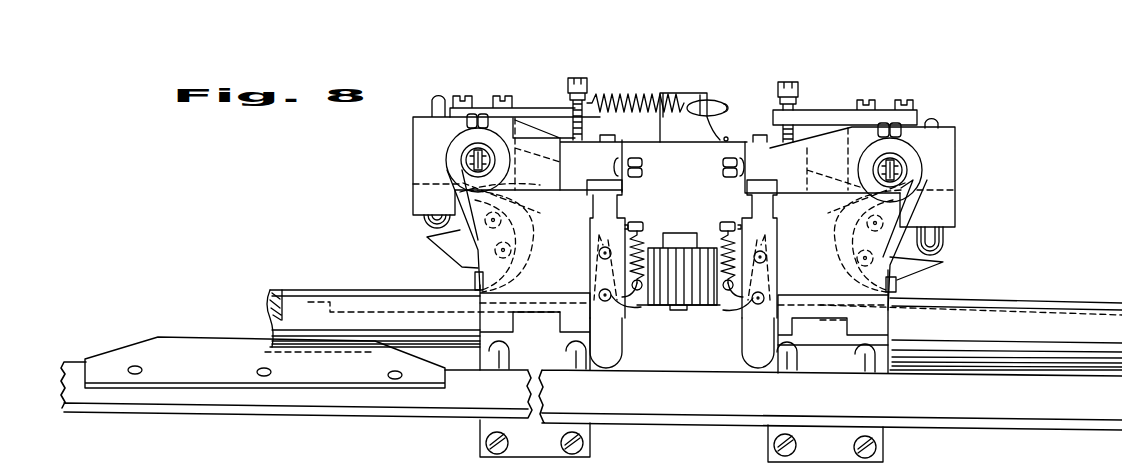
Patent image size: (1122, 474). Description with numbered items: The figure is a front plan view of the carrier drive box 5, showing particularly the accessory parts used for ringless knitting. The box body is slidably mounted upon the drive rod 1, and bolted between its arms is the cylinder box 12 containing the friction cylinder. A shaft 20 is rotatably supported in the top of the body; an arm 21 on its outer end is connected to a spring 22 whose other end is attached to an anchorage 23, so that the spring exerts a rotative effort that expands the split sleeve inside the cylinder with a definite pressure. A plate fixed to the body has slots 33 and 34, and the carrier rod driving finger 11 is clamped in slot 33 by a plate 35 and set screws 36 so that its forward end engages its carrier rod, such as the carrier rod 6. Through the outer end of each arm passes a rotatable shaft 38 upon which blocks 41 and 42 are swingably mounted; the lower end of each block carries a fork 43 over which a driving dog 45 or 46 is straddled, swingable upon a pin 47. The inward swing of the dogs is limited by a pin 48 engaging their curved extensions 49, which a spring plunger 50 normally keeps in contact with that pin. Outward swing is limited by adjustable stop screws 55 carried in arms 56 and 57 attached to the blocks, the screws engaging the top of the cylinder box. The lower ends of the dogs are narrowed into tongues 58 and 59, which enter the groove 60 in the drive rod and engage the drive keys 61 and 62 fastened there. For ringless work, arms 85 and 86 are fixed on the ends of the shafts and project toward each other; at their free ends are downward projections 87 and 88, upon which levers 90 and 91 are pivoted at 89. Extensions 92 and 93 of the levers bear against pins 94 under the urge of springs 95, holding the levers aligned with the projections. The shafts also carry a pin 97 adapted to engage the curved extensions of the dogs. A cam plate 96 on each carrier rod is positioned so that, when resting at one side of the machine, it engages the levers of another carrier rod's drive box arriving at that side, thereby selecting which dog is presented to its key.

The drive rod 1 is at (311, 290).
The drive box 5 is at (727, 136).
The carrier rod 6 is at (242, 408).
The carrier rod driving finger 11 is at (850, 330).
The cylinder box 12 is at (745, 142).
The shaft 20 is at (686, 96).
The arm 21 is at (722, 102).
The spring 22 is at (638, 102).
The anchorage 23 is at (567, 129).
The slot 33 is at (858, 349).
The slot 34 is at (523, 330).
The plate 35 is at (530, 458).
The set screws 36 is at (486, 441).
The rotatable shaft 38 is at (450, 158).
The block 41 is at (947, 128).
The block 42 is at (430, 131).
The fork 43 is at (505, 273).
The driving dog 45 is at (943, 262).
The driving dog 46 is at (427, 239).
The pin 47 is at (455, 255).
The pin 48 is at (502, 226).
The curved extensions 49 is at (522, 210).
The spring plunger 50 is at (424, 223).
The adjustable stop screws 55 is at (587, 80).
The arm 56 is at (824, 110).
The arm 57 is at (546, 108).
The tongue 58 is at (896, 287).
The tongue 59 is at (472, 282).
The groove 60 is at (272, 290).
The drive key 61 is at (1048, 310).
The drive key 62 is at (395, 300).
The arm 85 is at (822, 167).
The arm 86 is at (663, 163).
The projection 87 is at (752, 213).
The projection 88 is at (616, 214).
The pivot 89 is at (620, 302).
The lever 90 is at (745, 349).
The lever 91 is at (622, 349).
The extension 92 is at (767, 238).
The extension 93 is at (599, 242).
The pins 94 is at (598, 255).
The springs 95 is at (645, 232).
The cam plate 96 is at (190, 348).
The pin 97 is at (460, 191).